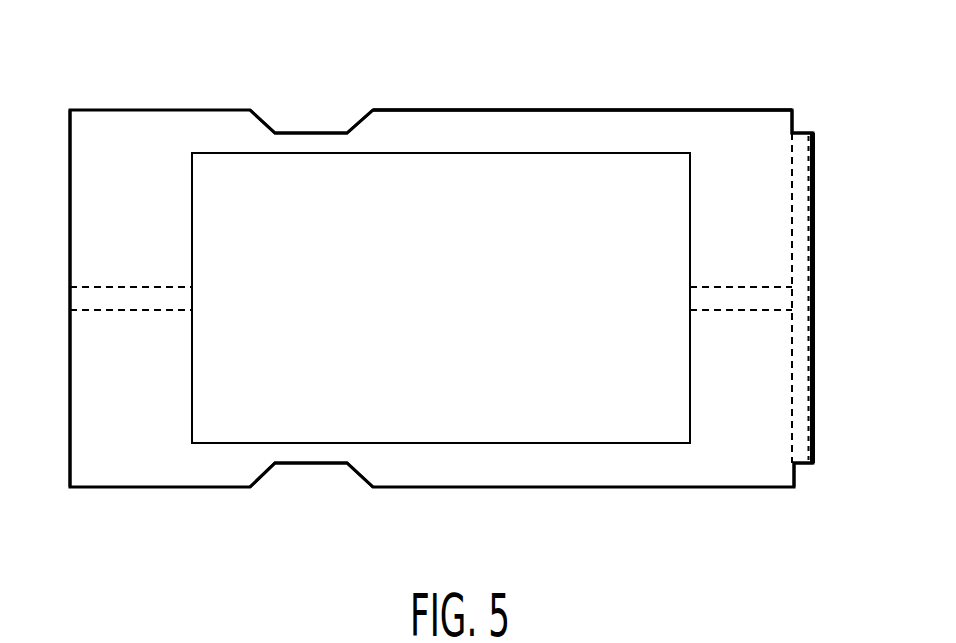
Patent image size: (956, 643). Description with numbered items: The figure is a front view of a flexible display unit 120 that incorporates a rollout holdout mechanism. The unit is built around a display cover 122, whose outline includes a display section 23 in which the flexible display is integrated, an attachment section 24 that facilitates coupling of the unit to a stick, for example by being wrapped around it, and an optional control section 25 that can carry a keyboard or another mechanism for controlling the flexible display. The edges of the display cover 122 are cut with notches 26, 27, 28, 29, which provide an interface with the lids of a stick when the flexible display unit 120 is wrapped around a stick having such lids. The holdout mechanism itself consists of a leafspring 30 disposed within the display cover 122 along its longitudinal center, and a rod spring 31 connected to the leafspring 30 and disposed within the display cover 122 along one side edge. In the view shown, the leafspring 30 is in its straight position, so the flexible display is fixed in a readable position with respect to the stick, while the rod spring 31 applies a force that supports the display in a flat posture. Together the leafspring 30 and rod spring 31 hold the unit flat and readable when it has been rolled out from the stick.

The flexible display unit 120 is at (106, 62).
The display cover 122 is at (658, 110).
The display section 23 is at (430, 144).
The attachment section 24 is at (117, 251).
The control section 25 is at (729, 257).
The notch 26 is at (311, 132).
The notch 27 is at (305, 465).
The notch 28 is at (803, 133).
The notch 29 is at (802, 467).
The leafspring 30 is at (80, 300).
The rod spring 31 is at (429, 314).